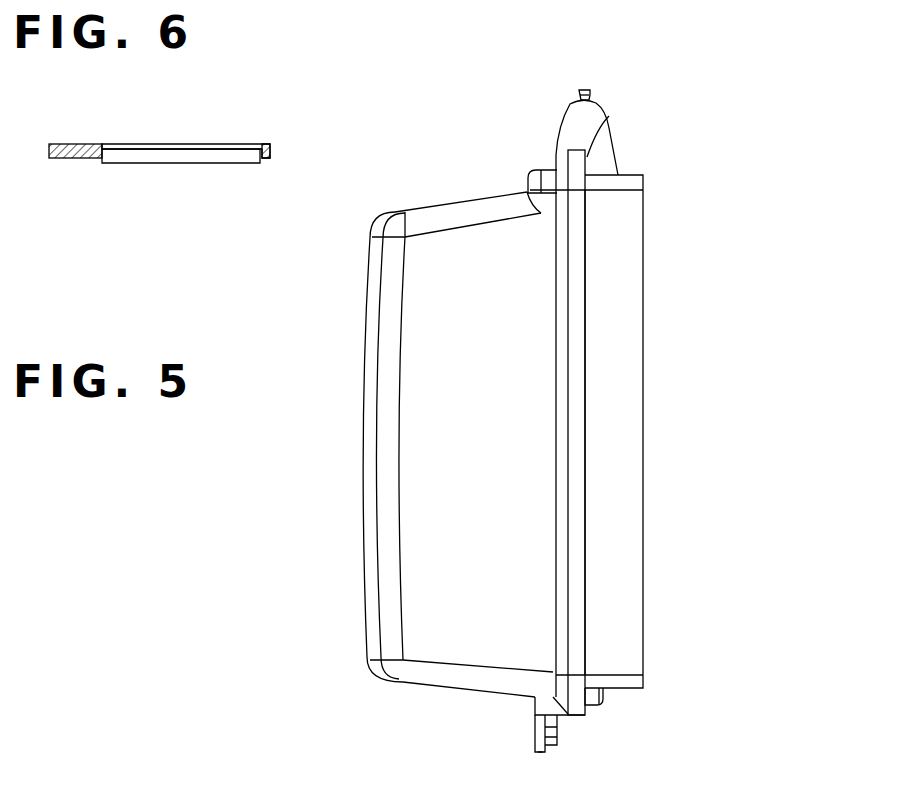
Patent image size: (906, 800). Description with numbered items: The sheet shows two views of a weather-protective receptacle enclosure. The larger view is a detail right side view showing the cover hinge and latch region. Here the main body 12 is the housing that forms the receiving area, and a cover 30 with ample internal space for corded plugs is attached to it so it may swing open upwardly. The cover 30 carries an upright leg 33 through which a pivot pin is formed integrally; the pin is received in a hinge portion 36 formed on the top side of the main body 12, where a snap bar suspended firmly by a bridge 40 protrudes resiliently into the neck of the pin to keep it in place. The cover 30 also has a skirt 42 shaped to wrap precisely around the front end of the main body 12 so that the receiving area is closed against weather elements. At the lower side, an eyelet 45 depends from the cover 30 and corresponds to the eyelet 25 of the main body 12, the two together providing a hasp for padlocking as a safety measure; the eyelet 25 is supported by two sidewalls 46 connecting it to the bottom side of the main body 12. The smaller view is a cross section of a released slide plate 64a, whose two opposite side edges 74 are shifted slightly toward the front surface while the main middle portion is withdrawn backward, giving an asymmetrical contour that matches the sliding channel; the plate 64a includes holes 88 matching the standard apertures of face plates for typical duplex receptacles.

In FIG. 5, the main body 12 is at (643, 462).
In FIG. 5, the eyelet 25 is at (557, 745).
In FIG. 5, the cover 30 is at (497, 453).
In FIG. 5, the upright leg 33 is at (588, 118).
In FIG. 5, the hinge portion 36 is at (605, 160).
In FIG. 5, the bridge 40 is at (579, 95).
In FIG. 5, the skirt 42 is at (585, 338).
In FIG. 5, the eyelet 45 is at (535, 745).
In FIG. 5, the sidewall 46 is at (603, 692).
In FIG. 6, the slide plate 64a is at (207, 144).
In FIG. 6, the side edge 74 is at (78, 143).
In FIG. 6, the hole 88 is at (212, 163).